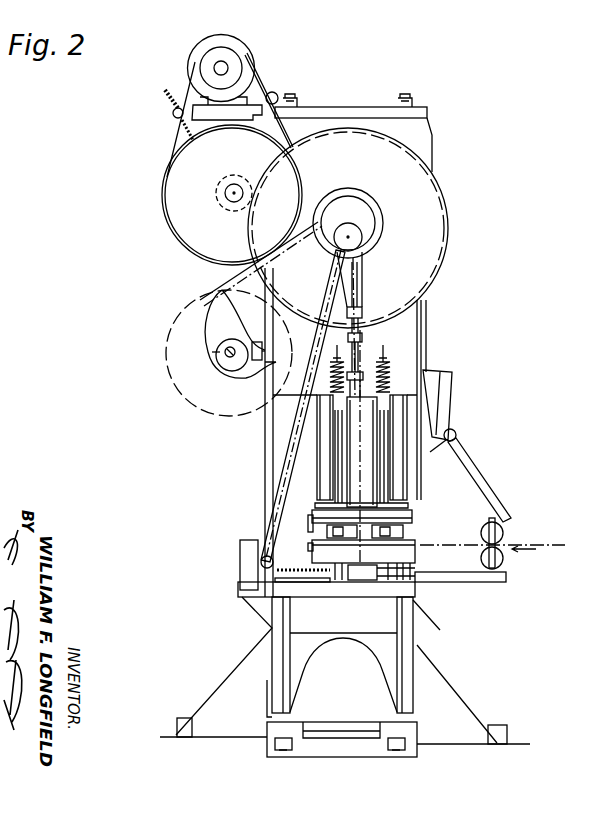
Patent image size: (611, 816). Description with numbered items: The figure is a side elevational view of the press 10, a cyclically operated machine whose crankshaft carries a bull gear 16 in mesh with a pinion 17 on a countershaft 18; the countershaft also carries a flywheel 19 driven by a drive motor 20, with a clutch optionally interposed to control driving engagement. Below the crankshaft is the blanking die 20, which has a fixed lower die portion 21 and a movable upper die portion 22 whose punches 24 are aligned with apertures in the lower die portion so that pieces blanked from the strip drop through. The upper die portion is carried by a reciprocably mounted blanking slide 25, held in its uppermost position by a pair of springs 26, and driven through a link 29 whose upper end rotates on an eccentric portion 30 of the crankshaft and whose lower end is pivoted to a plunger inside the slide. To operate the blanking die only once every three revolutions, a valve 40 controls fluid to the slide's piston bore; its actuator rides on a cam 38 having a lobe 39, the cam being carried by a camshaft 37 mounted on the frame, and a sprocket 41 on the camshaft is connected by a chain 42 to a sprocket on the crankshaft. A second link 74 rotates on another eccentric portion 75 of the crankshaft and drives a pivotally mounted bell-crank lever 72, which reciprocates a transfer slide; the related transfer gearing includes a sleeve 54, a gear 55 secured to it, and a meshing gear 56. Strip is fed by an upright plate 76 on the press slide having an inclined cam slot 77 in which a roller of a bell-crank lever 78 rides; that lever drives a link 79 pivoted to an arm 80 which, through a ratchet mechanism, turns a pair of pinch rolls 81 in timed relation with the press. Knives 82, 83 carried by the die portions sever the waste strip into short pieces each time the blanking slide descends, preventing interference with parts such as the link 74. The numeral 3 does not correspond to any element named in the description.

The press 10 is at (364, 76).
The blanking die 20 is at (228, 52).
The bull gear 16 is at (425, 190).
The eccentric portion 30 is at (356, 212).
The eccentric portion 75 is at (362, 242).
The flywheel 19 is at (190, 232).
The countershaft 18 is at (228, 192).
The pinion 17 is at (220, 200).
The chain 42 is at (215, 290).
The sprocket 41 is at (218, 400).
The lobe 39 is at (228, 334).
The valve 40 is at (256, 344).
The camshaft 37 is at (226, 360).
The cam 38 is at (209, 359).
The link 74 is at (258, 526).
The bell-crank lever 72 is at (230, 569).
The link 29 is at (350, 400).
The blanking slide 25 is at (362, 412).
The springs 26 is at (330, 372).
The center line 3 is at (356, 348).
The upper die portion 22 is at (428, 520).
The punches 24 is at (404, 530).
The lower die portion 21 is at (416, 548).
The knife 83 is at (310, 520).
The knife 82 is at (310, 546).
The sleeve 54 is at (350, 582).
The gear 55 is at (368, 582).
The gear 56 is at (312, 582).
The upright plate 76 is at (463, 392).
The cam slot 77 is at (440, 405).
The bell-crank lever 78 is at (458, 432).
The link 79 is at (478, 476).
The arm 80 is at (500, 524).
The pinch rolls 81 is at (506, 538).